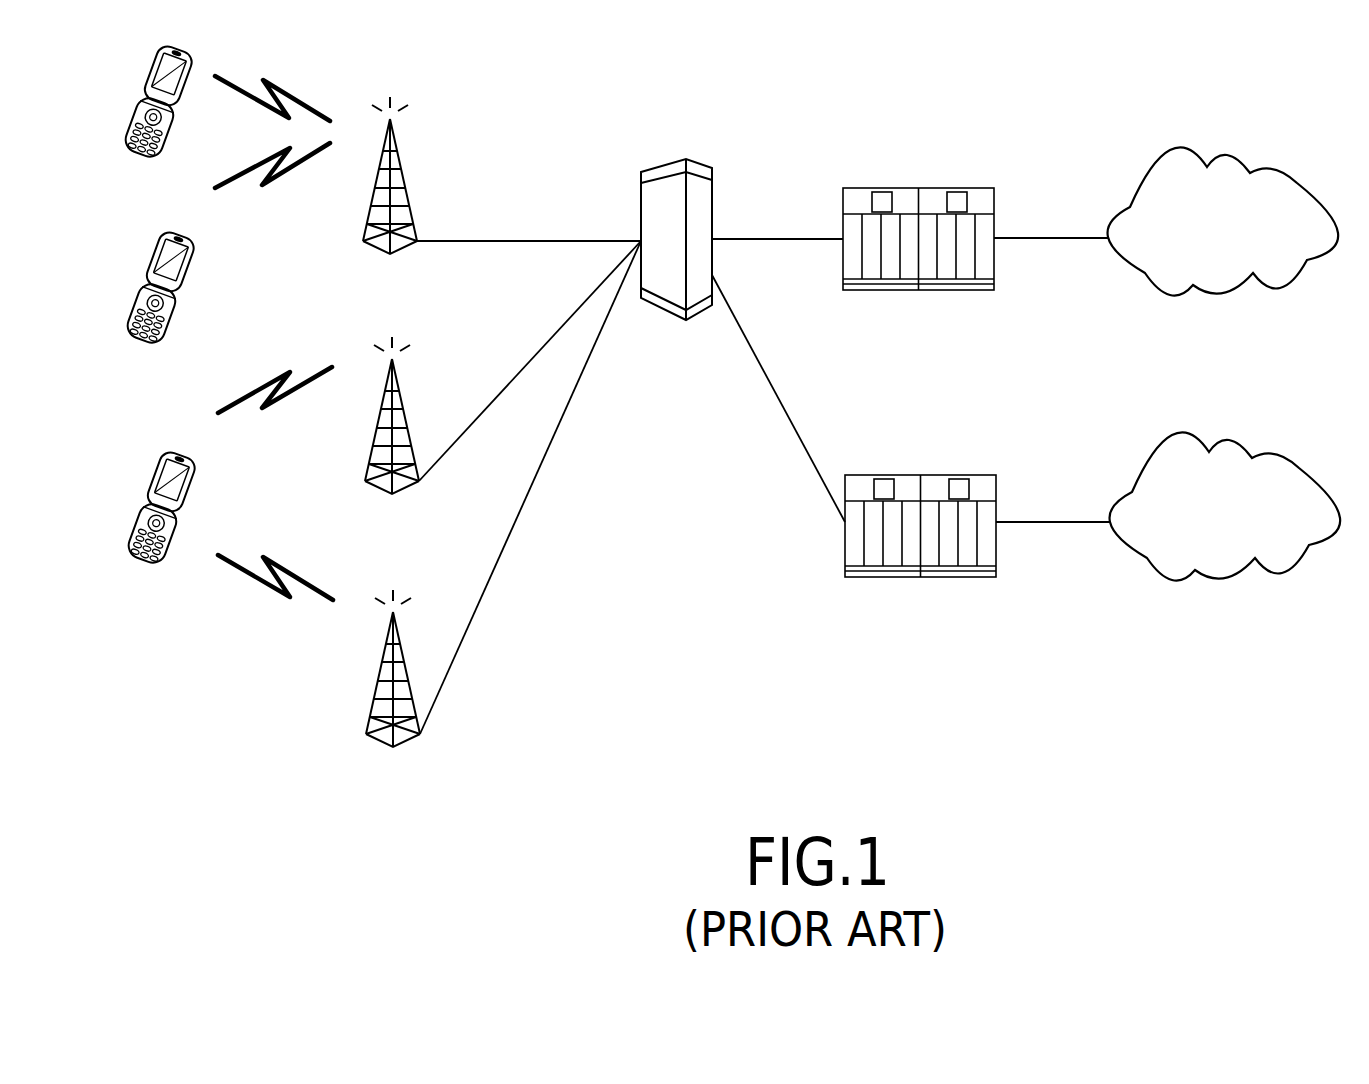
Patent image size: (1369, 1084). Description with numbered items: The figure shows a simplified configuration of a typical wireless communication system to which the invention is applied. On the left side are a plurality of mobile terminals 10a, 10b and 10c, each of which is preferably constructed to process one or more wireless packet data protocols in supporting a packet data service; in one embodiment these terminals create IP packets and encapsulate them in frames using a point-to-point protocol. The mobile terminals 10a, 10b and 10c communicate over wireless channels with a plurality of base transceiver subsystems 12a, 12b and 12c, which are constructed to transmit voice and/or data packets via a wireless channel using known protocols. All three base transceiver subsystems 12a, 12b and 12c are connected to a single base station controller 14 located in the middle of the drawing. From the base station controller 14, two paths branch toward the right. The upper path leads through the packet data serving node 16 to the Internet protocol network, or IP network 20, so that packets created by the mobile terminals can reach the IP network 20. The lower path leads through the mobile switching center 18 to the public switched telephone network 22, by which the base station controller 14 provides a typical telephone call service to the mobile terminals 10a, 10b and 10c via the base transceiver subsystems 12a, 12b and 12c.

The mobile terminal 10a is at (140, 112).
The mobile terminal 10b is at (140, 298).
The mobile terminal 10c is at (141, 520).
The base transceiver subsystem 12a is at (400, 153).
The base transceiver subsystem 12b is at (401, 394).
The base transceiver subsystem 12c is at (402, 646).
The base station controller 14 is at (697, 166).
The packet data serving node 16 is at (923, 188).
The mobile switching center 18 is at (923, 475).
The IP network 20 is at (1233, 157).
The public switched telephone network 22 is at (1234, 442).